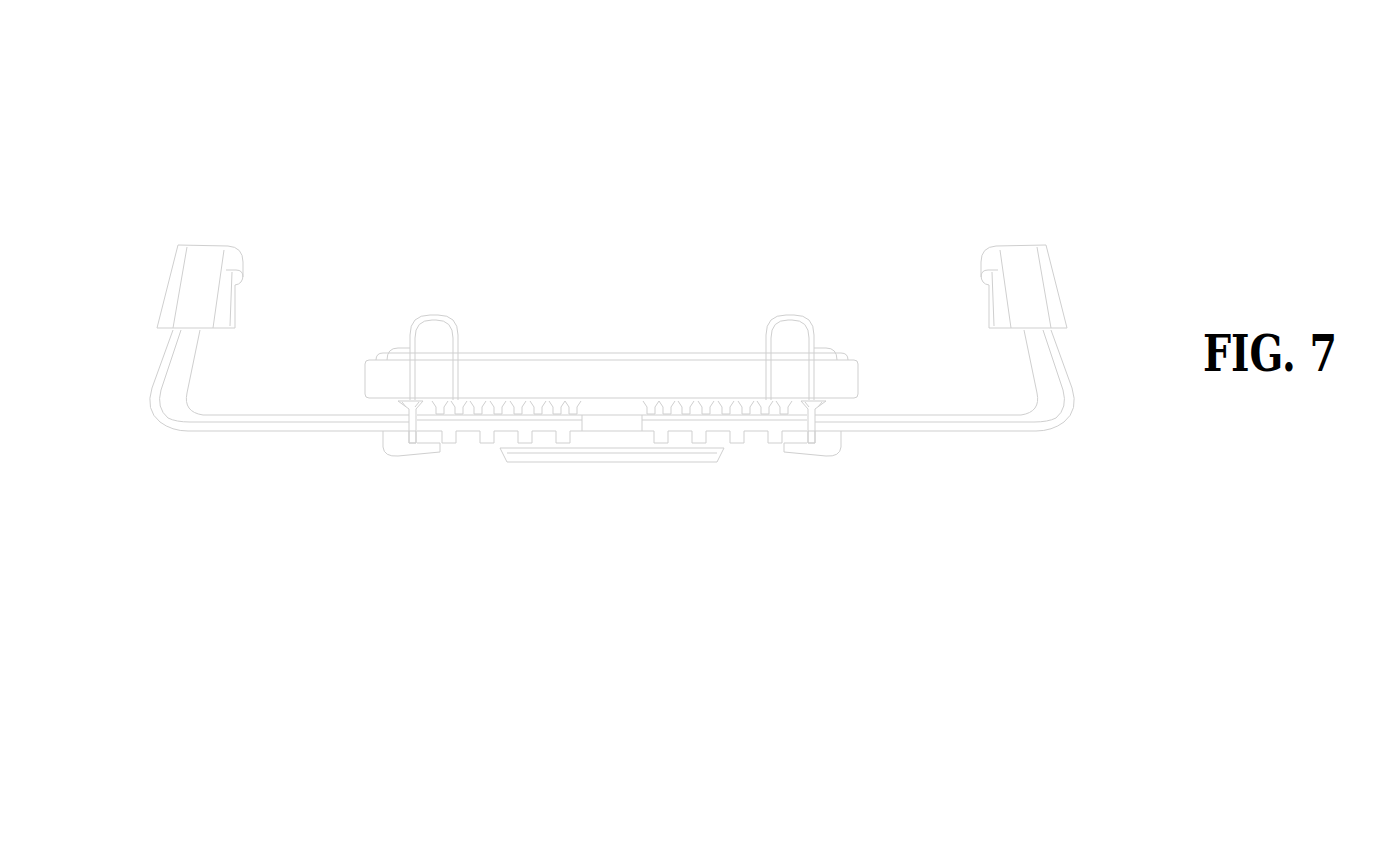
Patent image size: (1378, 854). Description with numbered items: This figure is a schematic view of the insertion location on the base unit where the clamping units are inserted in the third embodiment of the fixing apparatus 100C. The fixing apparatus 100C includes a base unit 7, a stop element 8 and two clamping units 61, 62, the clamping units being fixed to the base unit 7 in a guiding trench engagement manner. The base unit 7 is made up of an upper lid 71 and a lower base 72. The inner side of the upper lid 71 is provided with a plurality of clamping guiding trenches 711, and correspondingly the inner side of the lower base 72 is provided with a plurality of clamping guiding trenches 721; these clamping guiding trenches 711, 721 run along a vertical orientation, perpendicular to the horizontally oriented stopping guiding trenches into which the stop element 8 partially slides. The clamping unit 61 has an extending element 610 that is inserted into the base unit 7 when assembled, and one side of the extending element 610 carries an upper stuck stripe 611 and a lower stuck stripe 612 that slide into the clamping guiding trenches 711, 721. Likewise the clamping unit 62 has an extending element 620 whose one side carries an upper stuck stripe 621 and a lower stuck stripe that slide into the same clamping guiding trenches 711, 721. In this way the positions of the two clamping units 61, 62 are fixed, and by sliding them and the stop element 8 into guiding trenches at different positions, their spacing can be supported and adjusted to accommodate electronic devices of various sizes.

The fixing apparatus 100C is at (285, 207).
The clamping unit 61 is at (182, 289).
The clamping unit 62 is at (1042, 289).
The extending element 610 is at (277, 421).
The extending element 620 is at (967, 421).
The upper stuck stripe 611 is at (412, 418).
The upper stuck stripe 621 is at (812, 418).
The lower stuck stripe 612 is at (411, 432).
The base unit 7 is at (611, 441).
The upper lid 71 is at (637, 383).
The clamping guiding trenches 711 is at (452, 407).
The lower base 72 is at (710, 535).
The clamping guiding trenches 721 is at (487, 437).
The stop element 8 is at (432, 327).